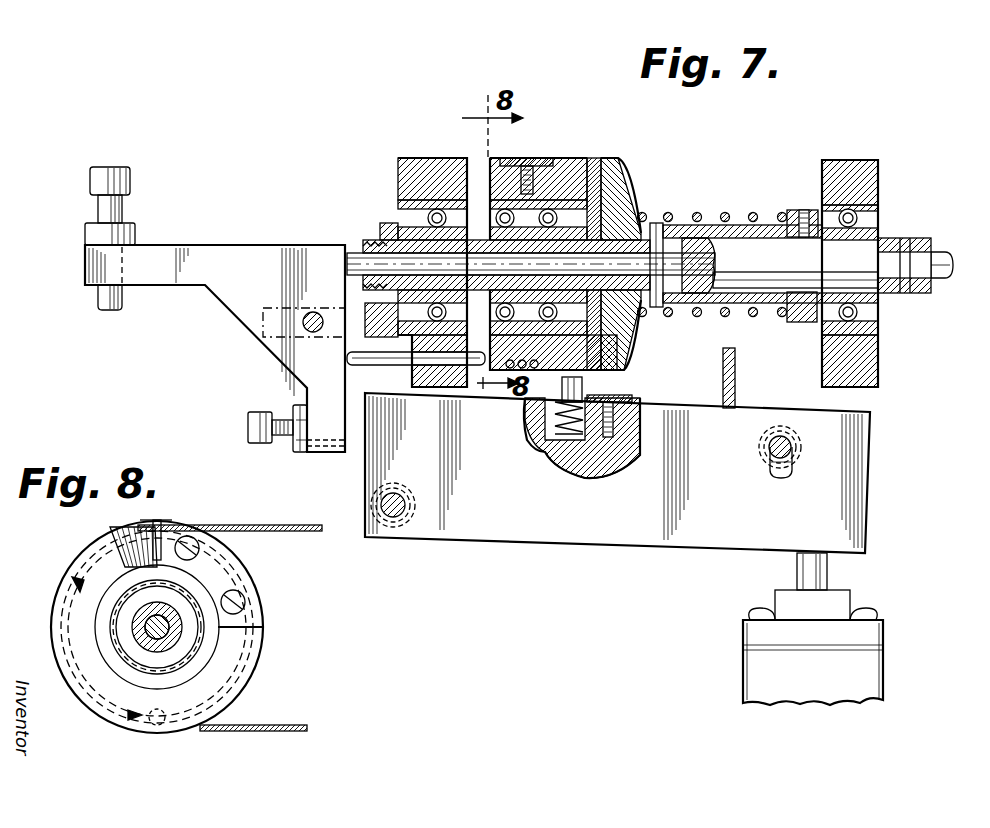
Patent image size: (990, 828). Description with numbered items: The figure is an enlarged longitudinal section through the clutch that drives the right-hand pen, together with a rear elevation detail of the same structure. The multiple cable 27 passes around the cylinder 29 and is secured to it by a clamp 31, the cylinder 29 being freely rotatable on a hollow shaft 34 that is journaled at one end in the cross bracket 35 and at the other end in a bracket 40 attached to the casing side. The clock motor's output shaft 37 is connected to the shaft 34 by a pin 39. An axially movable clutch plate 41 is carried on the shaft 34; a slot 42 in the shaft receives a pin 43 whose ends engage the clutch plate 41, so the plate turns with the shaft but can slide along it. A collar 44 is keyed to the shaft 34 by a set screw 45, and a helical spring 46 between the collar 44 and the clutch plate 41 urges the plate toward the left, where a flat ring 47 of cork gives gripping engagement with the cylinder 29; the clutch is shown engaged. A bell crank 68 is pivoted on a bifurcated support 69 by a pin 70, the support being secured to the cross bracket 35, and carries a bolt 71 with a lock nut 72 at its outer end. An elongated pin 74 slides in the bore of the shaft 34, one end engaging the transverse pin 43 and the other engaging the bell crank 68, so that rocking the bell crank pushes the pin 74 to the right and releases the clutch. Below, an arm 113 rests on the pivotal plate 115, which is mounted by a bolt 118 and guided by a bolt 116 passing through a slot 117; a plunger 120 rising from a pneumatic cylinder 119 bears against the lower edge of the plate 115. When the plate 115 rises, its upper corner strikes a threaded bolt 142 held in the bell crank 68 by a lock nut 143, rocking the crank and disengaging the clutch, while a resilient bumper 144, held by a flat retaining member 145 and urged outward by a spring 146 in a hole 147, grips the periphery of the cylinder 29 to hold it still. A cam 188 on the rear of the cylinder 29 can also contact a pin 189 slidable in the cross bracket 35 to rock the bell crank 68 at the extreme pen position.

In FIG. 7, the multiple cable 27 is at (505, 160).
In FIG. 8, the multiple cable 27 is at (300, 525).
In FIG. 7, the cylinder 29 is at (572, 158).
In FIG. 8, the cylinder 29 is at (262, 664).
In FIG. 7, the clamp 31 is at (532, 158).
In FIG. 8, the clamp 31 is at (172, 522).
In FIG. 7, the hollow shaft 34 is at (370, 244).
In FIG. 8, the hollow shaft 34 is at (135, 640).
In FIG. 7, the cross bracket 35 is at (420, 157).
In FIG. 7, the output shaft 37 is at (942, 262).
In FIG. 7, the pin 39 is at (905, 244).
In FIG. 7, the bracket 40 is at (850, 160).
In FIG. 7, the clutch plate 41 is at (626, 178).
In FIG. 7, the slot 42 is at (692, 288).
In FIG. 7, the pin 43 is at (657, 223).
In FIG. 7, the collar 44 is at (805, 322).
In FIG. 7, the set screw 45 is at (803, 210).
In FIG. 7, the helical spring 46 is at (727, 213).
In FIG. 7, the flat ring 47 is at (600, 158).
In FIG. 7, the bell crank 68 is at (215, 243).
In FIG. 7, the bifurcated support 69 is at (262, 320).
In FIG. 7, the pin 70 is at (305, 331).
In FIG. 7, the bolt 71 is at (97, 202).
In FIG. 7, the lock nut 72 is at (88, 232).
In FIG. 7, the elongated pin 74 is at (345, 255).
In FIG. 8, the elongated pin 74 is at (150, 625).
In FIG. 7, the arm 113 is at (736, 380).
In FIG. 7, the pivotal plate 115 is at (592, 548).
In FIG. 7, the bolt 116 is at (770, 448).
In FIG. 7, the slot 117 is at (792, 470).
In FIG. 7, the bolt 118 is at (393, 518).
In FIG. 7, the pneumatic cylinder 119 is at (875, 660).
In FIG. 7, the plunger 120 is at (828, 572).
In FIG. 7, the threaded bolt 142 is at (255, 412).
In FIG. 7, the lock nut 143 is at (295, 453).
In FIG. 7, the resilient bumper 144 is at (584, 385).
In FIG. 7, the flat retaining member 145 is at (632, 398).
In FIG. 7, the spring 146 is at (560, 455).
In FIG. 7, the hole 147 is at (548, 438).
In FIG. 8, the cam 188 is at (112, 532).
In FIG. 7, the pin 189 is at (393, 370).
In FIG. 8, the pin 189 is at (156, 727).